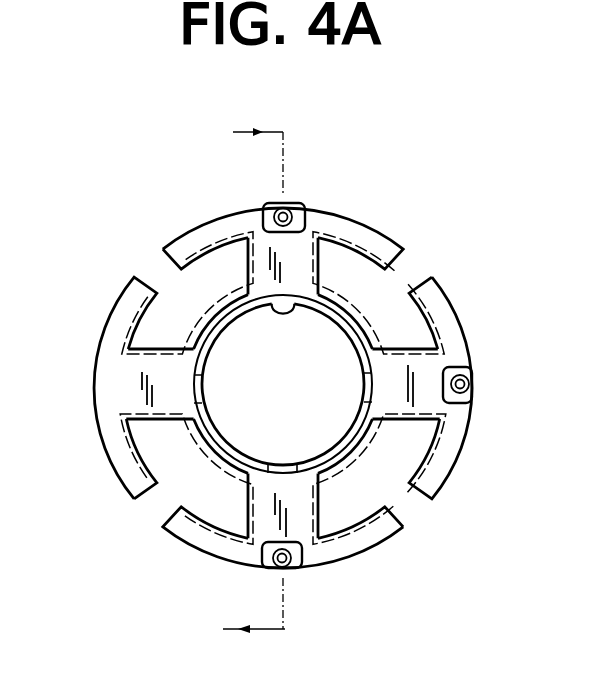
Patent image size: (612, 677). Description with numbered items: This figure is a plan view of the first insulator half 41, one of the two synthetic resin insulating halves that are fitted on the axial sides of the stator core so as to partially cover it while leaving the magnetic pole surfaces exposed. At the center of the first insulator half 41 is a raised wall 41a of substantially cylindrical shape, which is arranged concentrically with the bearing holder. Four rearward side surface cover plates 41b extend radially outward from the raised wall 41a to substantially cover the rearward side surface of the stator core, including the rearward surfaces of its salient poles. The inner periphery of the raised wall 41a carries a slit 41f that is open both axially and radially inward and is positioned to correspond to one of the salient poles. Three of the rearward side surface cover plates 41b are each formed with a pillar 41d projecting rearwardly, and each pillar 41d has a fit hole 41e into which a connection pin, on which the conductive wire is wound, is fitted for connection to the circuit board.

The first insulator half 41 is at (175, 213).
The raised wall 41a is at (268, 208).
The rearward side surface cover plates 41b is at (333, 220).
The pillar 41d is at (468, 368).
The fit hole 41e is at (291, 209).
The slit 41f is at (283, 312).